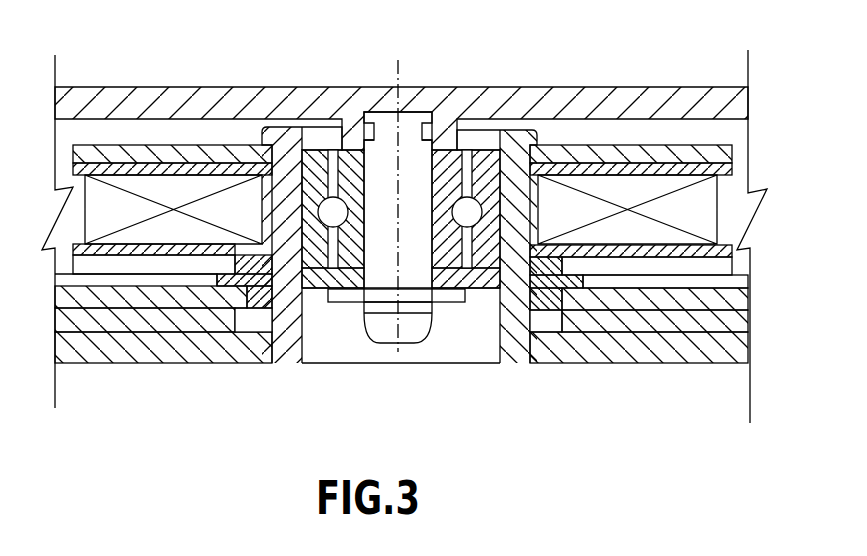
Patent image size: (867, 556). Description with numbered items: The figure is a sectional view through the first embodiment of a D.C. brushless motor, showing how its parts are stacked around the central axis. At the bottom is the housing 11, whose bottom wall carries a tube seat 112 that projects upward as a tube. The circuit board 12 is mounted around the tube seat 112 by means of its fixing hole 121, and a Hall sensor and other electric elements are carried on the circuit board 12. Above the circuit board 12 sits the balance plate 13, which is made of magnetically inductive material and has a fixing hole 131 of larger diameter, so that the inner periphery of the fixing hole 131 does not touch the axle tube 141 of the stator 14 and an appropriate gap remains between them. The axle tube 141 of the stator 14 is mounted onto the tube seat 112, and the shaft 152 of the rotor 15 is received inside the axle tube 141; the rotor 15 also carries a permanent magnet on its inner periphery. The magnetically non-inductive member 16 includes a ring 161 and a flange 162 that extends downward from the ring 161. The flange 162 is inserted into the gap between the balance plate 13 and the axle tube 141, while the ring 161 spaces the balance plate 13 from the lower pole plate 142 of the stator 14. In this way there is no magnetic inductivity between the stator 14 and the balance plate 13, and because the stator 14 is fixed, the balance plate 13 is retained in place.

The housing 11 is at (742, 352).
The circuit board 12 is at (128, 313).
The tube seat 112 is at (247, 310).
The balance plate 13 is at (83, 293).
The fixing hole 131 is at (257, 300).
The stator 14 is at (677, 187).
The axle tube 141 is at (288, 350).
The lower pole plate 142 is at (579, 147).
The rotor 15 is at (620, 102).
The shaft 152 is at (412, 265).
The magnetically non-inductive member 16 is at (545, 312).
The ring 161 is at (628, 290).
The flange 162 is at (547, 290).
The fixing hole 121 is at (557, 300).